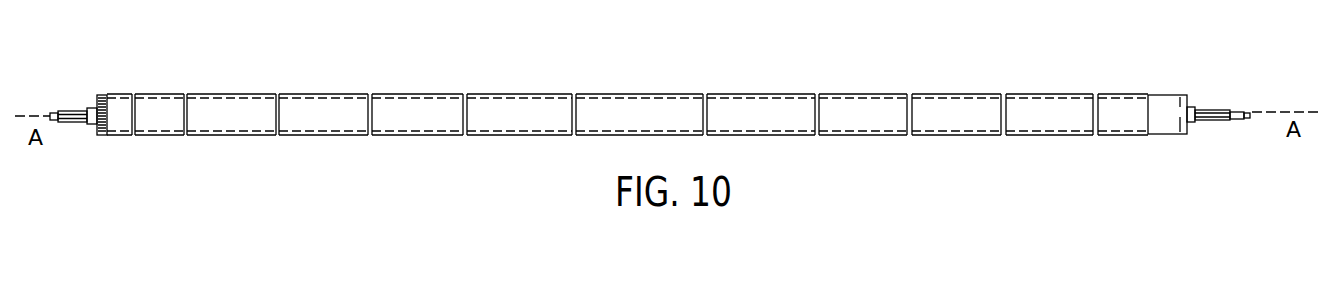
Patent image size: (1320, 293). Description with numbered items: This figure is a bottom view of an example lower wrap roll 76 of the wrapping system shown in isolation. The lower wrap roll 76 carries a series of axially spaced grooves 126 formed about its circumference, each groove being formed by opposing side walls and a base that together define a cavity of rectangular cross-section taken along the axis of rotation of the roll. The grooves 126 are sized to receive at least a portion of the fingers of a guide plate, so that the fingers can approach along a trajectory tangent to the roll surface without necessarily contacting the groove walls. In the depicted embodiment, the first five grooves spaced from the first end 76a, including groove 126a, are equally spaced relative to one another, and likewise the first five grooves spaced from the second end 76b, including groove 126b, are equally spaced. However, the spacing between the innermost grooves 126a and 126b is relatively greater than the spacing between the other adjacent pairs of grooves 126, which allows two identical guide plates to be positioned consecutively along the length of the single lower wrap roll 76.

The lower wrap roll 76 is at (672, 124).
The first end 76a is at (95, 128).
The second end 76b is at (1190, 132).
The grooves 126 is at (463, 111).
The groove 126a is at (574, 118).
The groove 126b is at (703, 117).